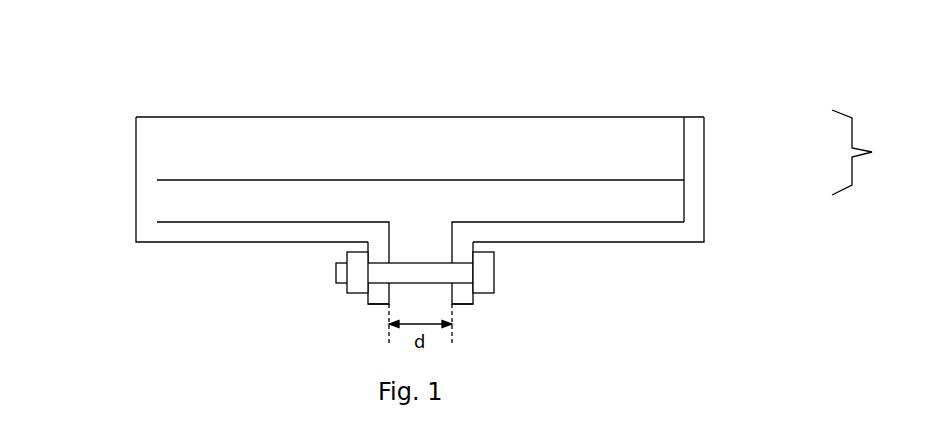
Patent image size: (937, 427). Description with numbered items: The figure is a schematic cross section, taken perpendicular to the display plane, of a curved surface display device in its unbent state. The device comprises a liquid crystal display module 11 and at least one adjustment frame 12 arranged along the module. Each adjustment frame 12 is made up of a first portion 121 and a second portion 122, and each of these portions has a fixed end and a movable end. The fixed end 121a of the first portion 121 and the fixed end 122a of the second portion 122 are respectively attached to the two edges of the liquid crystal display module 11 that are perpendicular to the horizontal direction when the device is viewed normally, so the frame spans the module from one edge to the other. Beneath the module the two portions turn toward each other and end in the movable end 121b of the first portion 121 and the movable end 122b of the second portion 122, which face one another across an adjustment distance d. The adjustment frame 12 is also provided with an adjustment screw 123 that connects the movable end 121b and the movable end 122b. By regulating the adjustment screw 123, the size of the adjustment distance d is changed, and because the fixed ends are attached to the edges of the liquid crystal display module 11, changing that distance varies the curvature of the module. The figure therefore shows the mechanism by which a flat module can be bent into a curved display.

The liquid crystal display module 11 is at (483, 65).
The adjustment frame 12 is at (869, 152).
The first portion 121 is at (494, 202).
The fixed end of the first portion 121a is at (189, 144).
The movable end of the first portion 121b is at (316, 312).
The second portion 122 is at (642, 221).
The fixed end of the second portion 122a is at (651, 148).
The movable end of the second portion 122b is at (527, 312).
The adjustment screw 123 is at (584, 235).